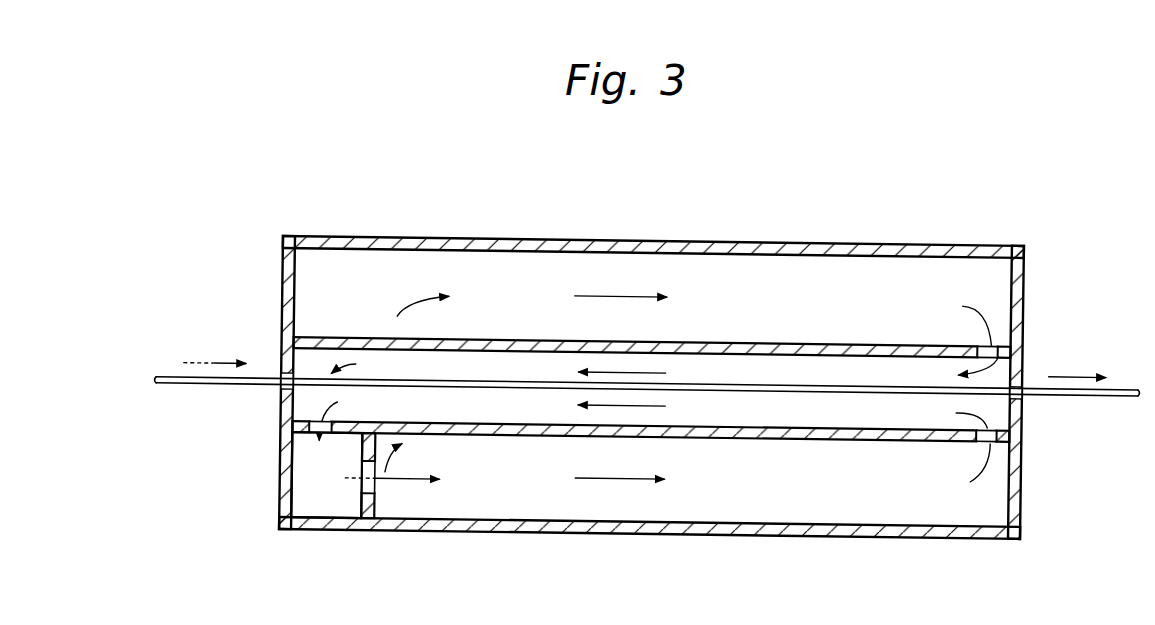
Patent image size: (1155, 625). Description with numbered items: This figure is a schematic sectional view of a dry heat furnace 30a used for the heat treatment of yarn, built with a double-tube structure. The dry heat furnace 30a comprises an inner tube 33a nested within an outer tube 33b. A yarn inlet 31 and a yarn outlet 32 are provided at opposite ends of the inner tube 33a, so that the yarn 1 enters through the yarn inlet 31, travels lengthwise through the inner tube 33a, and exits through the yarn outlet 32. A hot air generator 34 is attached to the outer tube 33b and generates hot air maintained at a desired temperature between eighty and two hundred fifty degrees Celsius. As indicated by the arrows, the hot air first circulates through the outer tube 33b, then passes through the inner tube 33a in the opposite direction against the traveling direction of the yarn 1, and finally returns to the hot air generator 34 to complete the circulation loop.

The yarn 1 is at (647, 401).
The dry heat furnace 30a is at (652, 355).
The yarn inlet 31 is at (267, 408).
The yarn outlet 32 is at (1044, 416).
The inner tube 33a is at (651, 458).
The outer tube 33b is at (652, 272).
The hot air generator 34 is at (365, 505).